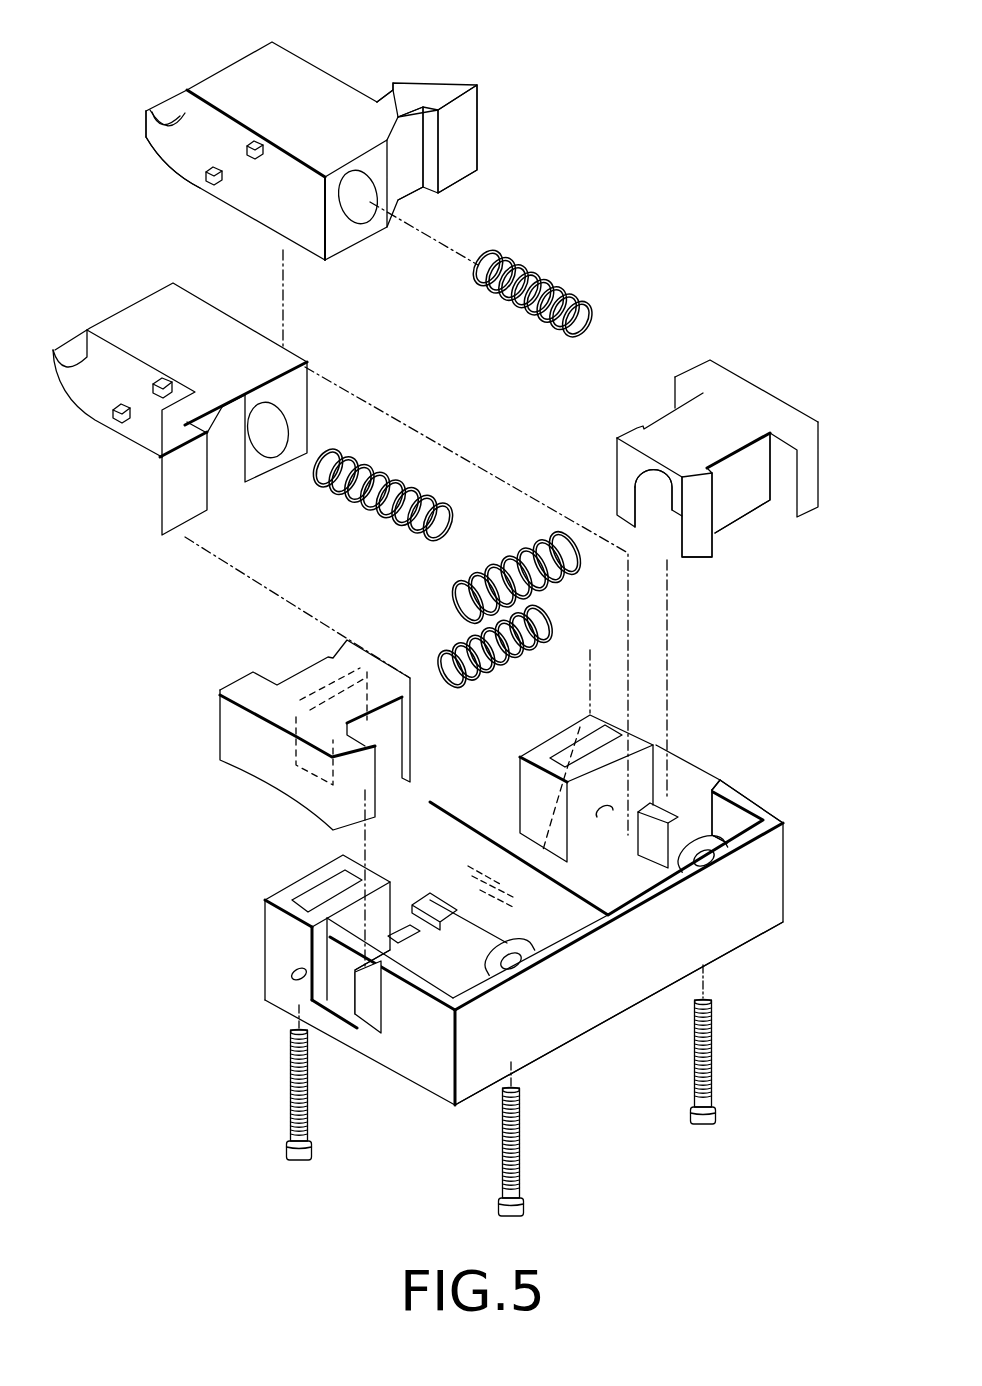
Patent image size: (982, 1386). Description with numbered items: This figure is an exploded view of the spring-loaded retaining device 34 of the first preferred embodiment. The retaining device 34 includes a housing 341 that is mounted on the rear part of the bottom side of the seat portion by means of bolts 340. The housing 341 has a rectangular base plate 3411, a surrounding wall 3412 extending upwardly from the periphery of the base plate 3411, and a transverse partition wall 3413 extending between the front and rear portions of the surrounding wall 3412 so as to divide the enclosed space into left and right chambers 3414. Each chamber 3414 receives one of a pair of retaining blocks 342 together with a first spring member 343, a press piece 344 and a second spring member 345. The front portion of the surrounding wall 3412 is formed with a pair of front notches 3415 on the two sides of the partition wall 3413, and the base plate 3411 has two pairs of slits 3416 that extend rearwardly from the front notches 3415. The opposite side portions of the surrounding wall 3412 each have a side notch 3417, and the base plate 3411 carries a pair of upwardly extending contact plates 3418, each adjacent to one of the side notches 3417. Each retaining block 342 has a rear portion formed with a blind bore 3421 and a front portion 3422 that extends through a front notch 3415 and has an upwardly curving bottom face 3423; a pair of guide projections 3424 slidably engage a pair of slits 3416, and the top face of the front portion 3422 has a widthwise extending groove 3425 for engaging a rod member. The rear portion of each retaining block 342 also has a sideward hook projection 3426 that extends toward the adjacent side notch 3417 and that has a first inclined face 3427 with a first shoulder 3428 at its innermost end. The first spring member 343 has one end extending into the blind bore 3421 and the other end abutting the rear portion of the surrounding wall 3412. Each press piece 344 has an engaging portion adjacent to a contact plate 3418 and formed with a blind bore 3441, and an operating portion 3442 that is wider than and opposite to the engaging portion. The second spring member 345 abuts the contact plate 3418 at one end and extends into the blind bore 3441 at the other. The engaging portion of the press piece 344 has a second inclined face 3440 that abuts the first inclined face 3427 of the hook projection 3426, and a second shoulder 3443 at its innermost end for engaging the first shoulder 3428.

The retaining device 34 is at (686, 278).
The bolts 340 is at (712, 1080).
The housing 341 is at (621, 988).
The base plate 3411 is at (444, 972).
The surrounding wall 3412 is at (735, 792).
The transverse partition wall 3413 is at (462, 840).
The chambers 3414 is at (650, 882).
The front notches 3415 is at (393, 840).
The slits 3416 is at (395, 922).
The side notches 3417 is at (362, 1038).
The contact plates 3418 is at (366, 1003).
The retaining blocks 342 is at (300, 95).
The blind bore 3421 is at (355, 208).
The front portion 3422 is at (148, 116).
The upwardly curving bottom face 3423 is at (152, 150).
The guide projections 3424 is at (210, 192).
The widthwise extending groove 3425 is at (170, 103).
The sideward hook projection 3426 is at (420, 96).
The first inclined face 3427 is at (405, 86).
The first shoulder 3428 is at (390, 86).
The first spring member 343 is at (539, 276).
The press piece 344 is at (775, 412).
The second inclined face 3440 is at (700, 483).
The blind bore 3441 is at (662, 520).
The operating portion 3442 is at (730, 386).
The second shoulder 3443 is at (720, 470).
The second spring member 345 is at (495, 565).